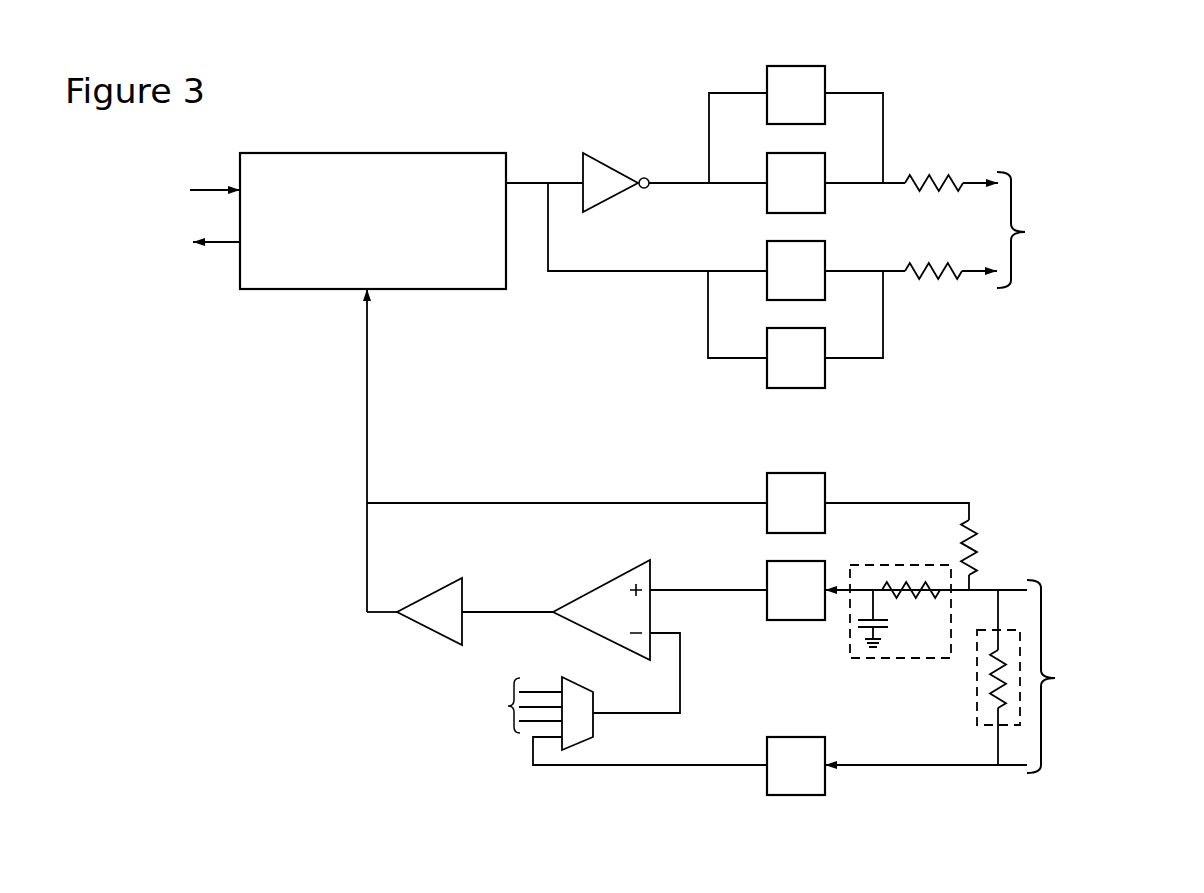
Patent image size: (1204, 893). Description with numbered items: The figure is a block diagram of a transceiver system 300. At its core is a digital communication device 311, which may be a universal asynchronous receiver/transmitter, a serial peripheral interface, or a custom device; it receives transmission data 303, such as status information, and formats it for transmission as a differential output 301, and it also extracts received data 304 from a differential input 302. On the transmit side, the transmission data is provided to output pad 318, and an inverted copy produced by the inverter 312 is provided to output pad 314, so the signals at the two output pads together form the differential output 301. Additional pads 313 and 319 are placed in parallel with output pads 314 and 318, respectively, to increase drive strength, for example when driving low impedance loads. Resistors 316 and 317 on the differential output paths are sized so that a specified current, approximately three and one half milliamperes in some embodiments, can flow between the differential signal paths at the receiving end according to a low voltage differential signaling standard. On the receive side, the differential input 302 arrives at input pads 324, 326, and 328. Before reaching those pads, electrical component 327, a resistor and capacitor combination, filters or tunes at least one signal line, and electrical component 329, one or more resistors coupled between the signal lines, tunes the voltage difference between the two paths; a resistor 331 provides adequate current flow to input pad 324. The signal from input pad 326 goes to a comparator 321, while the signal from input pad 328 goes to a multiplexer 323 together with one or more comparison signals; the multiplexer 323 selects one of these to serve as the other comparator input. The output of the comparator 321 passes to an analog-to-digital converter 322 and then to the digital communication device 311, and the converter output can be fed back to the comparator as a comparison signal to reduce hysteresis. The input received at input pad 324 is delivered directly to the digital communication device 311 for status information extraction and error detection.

The transceiver system 300 is at (896, 47).
The differential output 301 is at (1078, 230).
The differential input 302 is at (1107, 676).
The transmission data 303 is at (146, 188).
The received data 304 is at (163, 247).
The digital communication device 311 is at (373, 221).
The inverter 312 is at (616, 182).
The additional pad 313 is at (796, 95).
The output pad 314 is at (796, 183).
The resistor 316 is at (951, 169).
The resistor 317 is at (951, 257).
The output pad 318 is at (796, 270).
The additional pad 319 is at (796, 358).
The comparator 321 is at (601, 610).
The analog-to-digital converter 322 is at (429, 611).
The multiplexer 323 is at (585, 687).
The input pad 324 is at (796, 503).
The input pad 326 is at (808, 590).
The electrical component 327 is at (924, 564).
The input pad 328 is at (808, 766).
The electrical component 329 is at (975, 708).
The resistor 331 is at (991, 547).